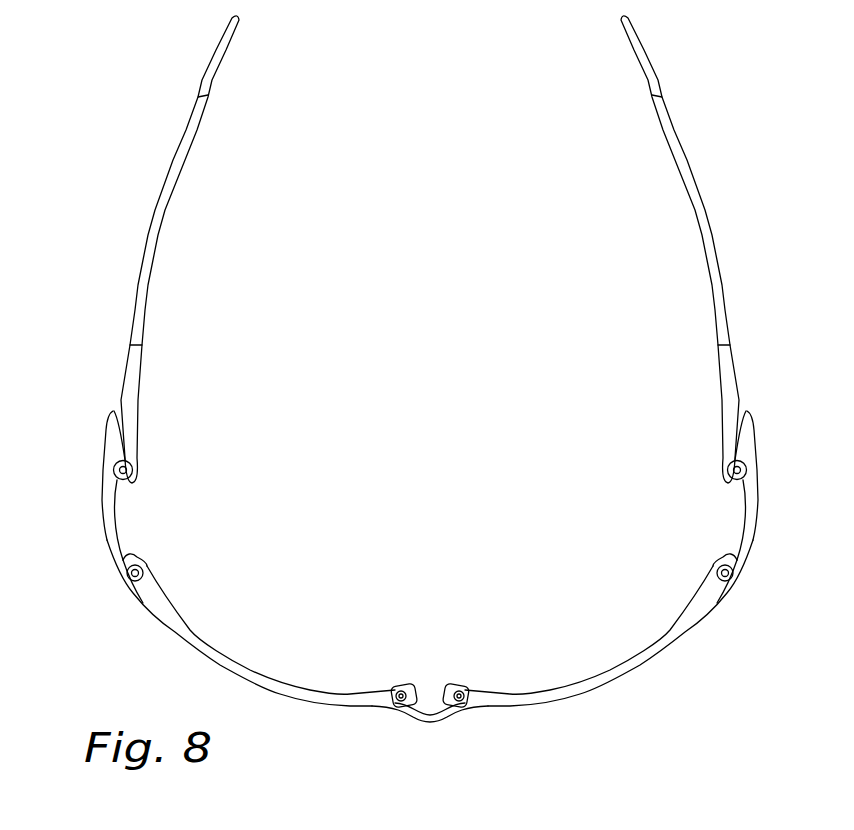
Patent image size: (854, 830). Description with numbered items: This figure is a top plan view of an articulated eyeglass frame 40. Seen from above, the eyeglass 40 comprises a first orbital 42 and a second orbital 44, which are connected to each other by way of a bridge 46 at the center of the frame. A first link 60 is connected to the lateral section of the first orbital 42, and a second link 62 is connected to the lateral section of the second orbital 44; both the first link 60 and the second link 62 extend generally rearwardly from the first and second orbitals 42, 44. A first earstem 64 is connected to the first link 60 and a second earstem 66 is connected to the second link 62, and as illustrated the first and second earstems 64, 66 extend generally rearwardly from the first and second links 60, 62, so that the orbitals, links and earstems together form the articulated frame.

The eyeglass 40 is at (604, 740).
The first orbital 42 is at (313, 700).
The second orbital 44 is at (520, 700).
The bridge 46 is at (428, 722).
The first link 60 is at (103, 493).
The second link 62 is at (760, 516).
The first earstem 64 is at (155, 211).
The second earstem 66 is at (705, 215).